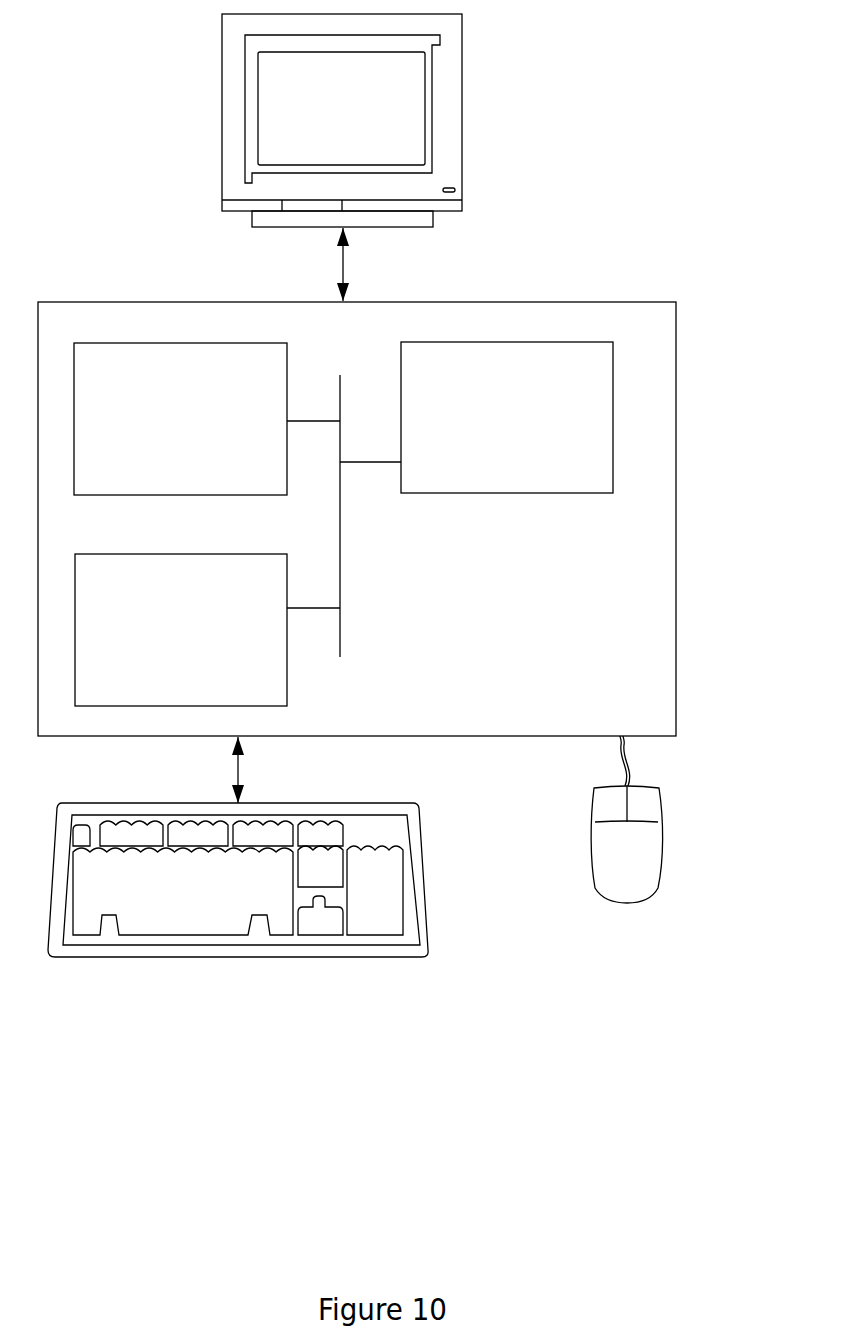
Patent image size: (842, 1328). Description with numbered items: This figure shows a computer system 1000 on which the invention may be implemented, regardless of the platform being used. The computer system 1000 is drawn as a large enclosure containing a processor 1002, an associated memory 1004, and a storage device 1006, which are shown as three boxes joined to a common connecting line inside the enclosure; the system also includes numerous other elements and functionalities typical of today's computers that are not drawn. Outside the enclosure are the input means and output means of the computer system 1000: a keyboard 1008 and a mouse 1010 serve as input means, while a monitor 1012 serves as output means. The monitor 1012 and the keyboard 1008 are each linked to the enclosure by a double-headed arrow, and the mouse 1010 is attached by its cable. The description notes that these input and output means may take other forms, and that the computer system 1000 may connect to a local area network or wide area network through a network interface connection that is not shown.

The computer system 1000 is at (655, 170).
The processor 1002 is at (500, 429).
The memory 1004 is at (157, 432).
The storage device 1006 is at (153, 641).
The keyboard 1008 is at (150, 916).
The mouse 1010 is at (602, 859).
The monitor 1012 is at (317, 122).